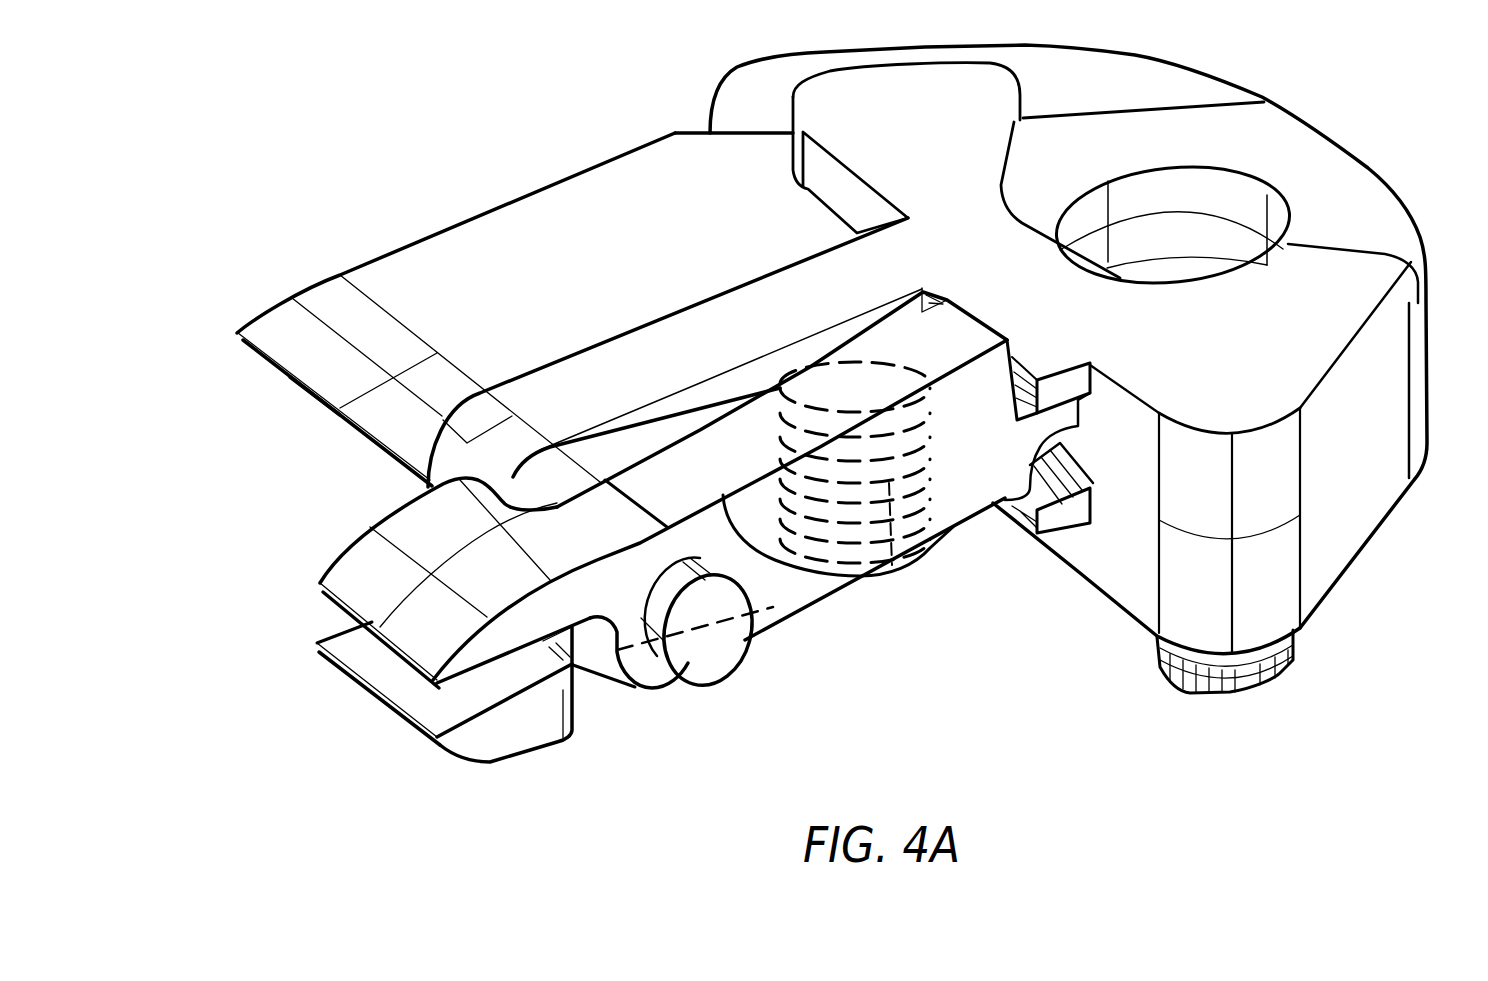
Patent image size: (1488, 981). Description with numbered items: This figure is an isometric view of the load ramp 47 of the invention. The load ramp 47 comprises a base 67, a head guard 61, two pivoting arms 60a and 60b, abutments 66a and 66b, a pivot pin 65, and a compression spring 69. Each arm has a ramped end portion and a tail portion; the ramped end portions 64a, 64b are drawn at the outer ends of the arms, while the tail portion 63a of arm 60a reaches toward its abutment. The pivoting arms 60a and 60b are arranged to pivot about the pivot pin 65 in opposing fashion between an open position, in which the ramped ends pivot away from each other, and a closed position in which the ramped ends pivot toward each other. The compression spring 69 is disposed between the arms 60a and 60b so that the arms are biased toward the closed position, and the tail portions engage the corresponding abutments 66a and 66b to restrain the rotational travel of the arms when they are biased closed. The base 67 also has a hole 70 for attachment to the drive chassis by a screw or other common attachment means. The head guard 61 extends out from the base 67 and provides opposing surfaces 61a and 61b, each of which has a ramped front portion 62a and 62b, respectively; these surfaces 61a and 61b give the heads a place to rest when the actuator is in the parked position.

The load ramp 47 is at (1287, 790).
The pivoting arm 60a is at (850, 578).
The pivoting arm 60b is at (783, 607).
The head guard 61 is at (524, 326).
The surface 61a is at (405, 278).
The surface 61b is at (360, 453).
The ramped front portion 62a is at (300, 292).
The ramped front portion 62b is at (291, 388).
The tail portion 63a is at (1050, 428).
The ramped end portion 64a is at (353, 553).
The ramped end portion 64b is at (510, 758).
The pivot pin 65 is at (703, 650).
The abutment 66a is at (1053, 395).
The abutment 66b is at (1047, 523).
The base 67 is at (1363, 547).
The compression spring 69 is at (906, 566).
The hole 70 is at (1178, 230).